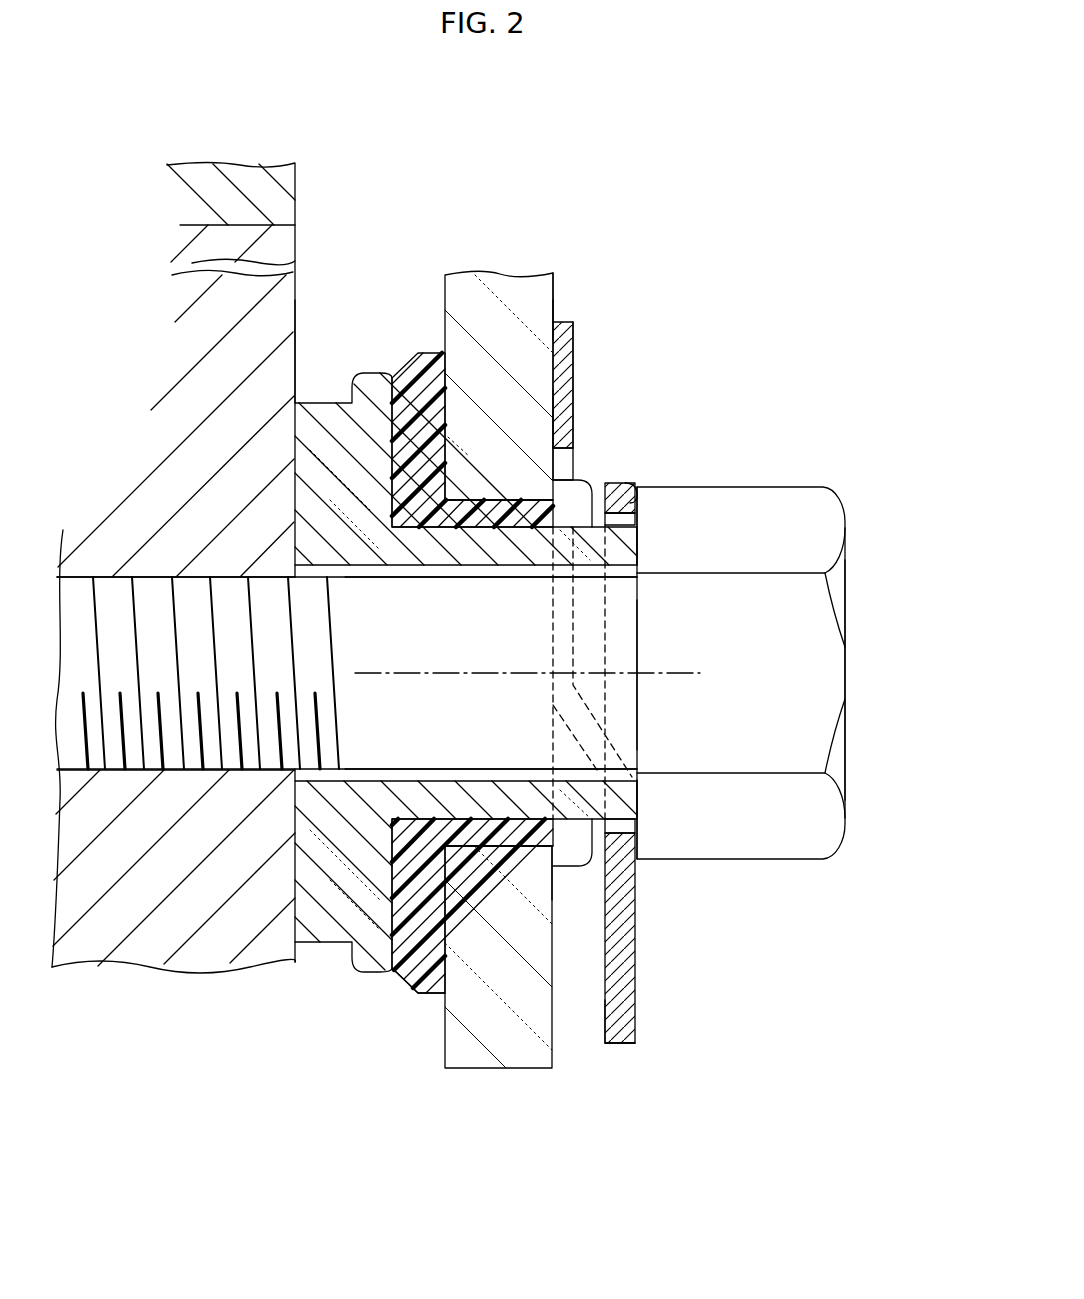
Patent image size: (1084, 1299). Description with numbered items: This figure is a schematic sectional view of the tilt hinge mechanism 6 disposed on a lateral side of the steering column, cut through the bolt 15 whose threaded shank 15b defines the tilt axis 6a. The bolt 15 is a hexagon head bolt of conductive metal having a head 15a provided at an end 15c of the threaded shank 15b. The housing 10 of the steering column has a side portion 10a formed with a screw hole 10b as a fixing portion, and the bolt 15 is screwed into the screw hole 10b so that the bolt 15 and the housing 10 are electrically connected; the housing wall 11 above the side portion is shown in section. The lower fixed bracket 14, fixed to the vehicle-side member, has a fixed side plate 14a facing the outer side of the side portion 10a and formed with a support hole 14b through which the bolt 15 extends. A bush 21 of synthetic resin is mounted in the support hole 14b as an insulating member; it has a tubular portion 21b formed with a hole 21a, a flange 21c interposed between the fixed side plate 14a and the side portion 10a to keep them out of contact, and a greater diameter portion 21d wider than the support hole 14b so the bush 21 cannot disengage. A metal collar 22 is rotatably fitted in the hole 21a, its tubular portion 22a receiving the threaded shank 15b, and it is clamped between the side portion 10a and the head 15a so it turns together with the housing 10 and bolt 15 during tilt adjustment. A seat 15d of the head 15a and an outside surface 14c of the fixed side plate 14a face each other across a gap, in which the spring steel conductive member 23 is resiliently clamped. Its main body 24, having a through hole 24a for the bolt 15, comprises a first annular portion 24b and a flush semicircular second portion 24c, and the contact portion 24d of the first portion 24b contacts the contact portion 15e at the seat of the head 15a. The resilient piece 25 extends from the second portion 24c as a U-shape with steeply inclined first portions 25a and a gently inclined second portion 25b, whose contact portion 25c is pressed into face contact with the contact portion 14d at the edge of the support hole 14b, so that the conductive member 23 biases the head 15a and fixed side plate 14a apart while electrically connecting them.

The tilt hinge mechanism 6 is at (700, 250).
The tilt axis 6a is at (655, 673).
The housing 10 is at (297, 300).
The side portion 10a is at (290, 352).
The screw hole 10b is at (202, 577).
The housing wall 11 is at (296, 185).
The lower fixed bracket 14 is at (556, 281).
The fixed side plate 14a is at (541, 317).
The support hole 14b is at (468, 505).
The outside surface 14c is at (556, 291).
The contact portion 14d is at (573, 345).
The bolt 15 is at (808, 486).
The head 15a is at (793, 838).
The threaded shank 15b is at (118, 600).
The end of the threaded shank 15c is at (617, 705).
The seat 15d is at (635, 843).
The contact portion 15e is at (627, 478).
The bush 21 is at (422, 992).
The hole 21a is at (496, 832).
The tubular portion 21b is at (520, 848).
The flange 21c is at (435, 995).
The greater diameter portion 21d is at (572, 848).
The collar 22 is at (322, 945).
The tubular portion 22a is at (417, 797).
The conductive member 23 is at (618, 1046).
The main body 24 is at (630, 978).
The through hole 24a is at (637, 822).
The first annular portion 24b is at (628, 508).
The second portion 24c is at (630, 1025).
The contact portion 24d is at (632, 490).
The resilient piece 25 is at (575, 384).
The first portion 25a is at (593, 743).
The second portion 25b is at (568, 398).
The contact portion 25c is at (552, 390).